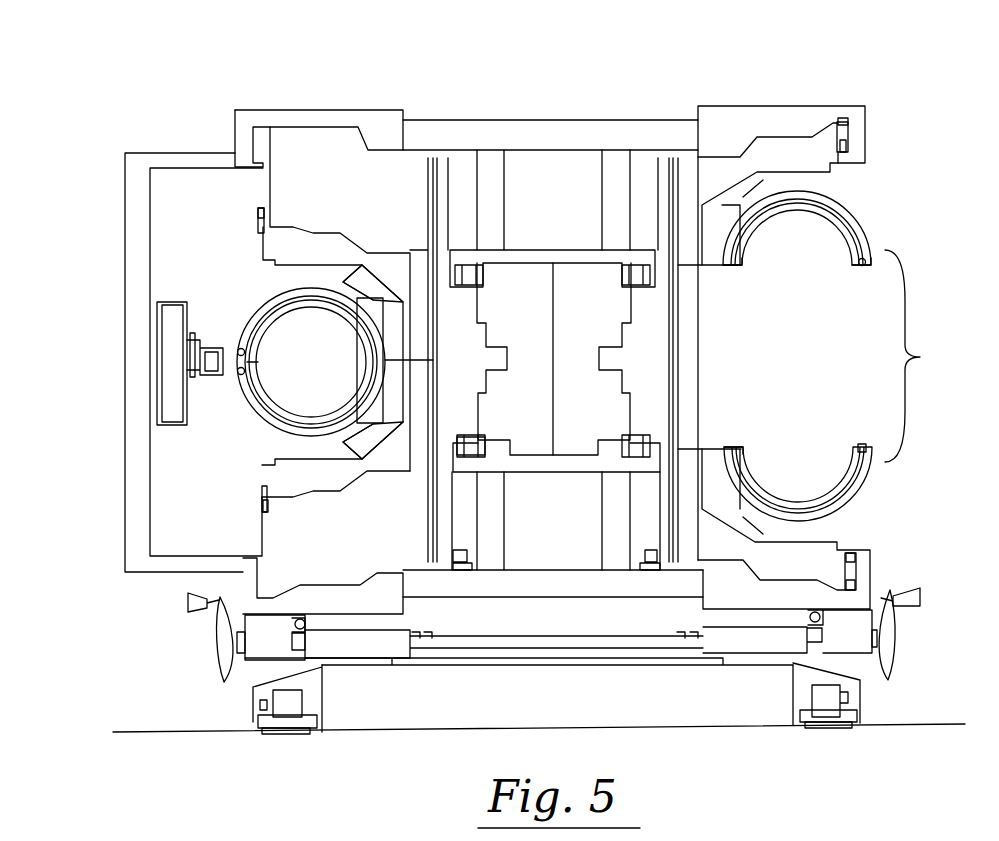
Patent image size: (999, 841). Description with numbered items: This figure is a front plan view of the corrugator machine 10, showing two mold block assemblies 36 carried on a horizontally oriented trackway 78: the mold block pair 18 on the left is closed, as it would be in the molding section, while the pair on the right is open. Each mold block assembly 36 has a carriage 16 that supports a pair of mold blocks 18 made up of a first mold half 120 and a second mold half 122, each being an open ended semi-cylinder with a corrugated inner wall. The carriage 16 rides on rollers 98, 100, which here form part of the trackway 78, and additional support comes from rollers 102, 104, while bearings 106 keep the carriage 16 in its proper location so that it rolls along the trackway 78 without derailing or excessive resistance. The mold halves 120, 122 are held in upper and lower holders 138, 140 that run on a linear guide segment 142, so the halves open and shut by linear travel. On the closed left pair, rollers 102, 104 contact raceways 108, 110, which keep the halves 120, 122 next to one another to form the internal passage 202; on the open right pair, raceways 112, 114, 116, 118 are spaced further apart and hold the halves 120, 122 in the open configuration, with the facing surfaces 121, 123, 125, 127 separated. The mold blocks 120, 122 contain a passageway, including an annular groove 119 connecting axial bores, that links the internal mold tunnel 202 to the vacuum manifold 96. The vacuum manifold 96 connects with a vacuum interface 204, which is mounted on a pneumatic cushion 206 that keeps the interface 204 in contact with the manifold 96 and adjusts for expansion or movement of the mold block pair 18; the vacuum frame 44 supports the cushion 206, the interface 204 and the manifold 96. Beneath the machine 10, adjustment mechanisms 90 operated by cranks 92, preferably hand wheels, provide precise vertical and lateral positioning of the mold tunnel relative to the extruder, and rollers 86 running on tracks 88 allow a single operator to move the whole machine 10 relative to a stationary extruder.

The machine 10 is at (478, 78).
The carriage 16 is at (482, 336).
The mold block pair 18 is at (245, 293).
The mold block assembly 36 is at (308, 226).
The vacuum frame 44 is at (195, 157).
The trackway 78 is at (500, 272).
The rollers 86 is at (283, 706).
The tracks 88 is at (285, 732).
The adjustment mechanism 90 is at (397, 640).
The crank 92 is at (222, 643).
The vacuum manifold 96 is at (239, 348).
The roller 98 is at (482, 265).
The roller 100 is at (490, 456).
The roller 102 is at (258, 228).
The roller 104 is at (262, 493).
The bearings 106 is at (455, 553).
The raceway 108 is at (258, 214).
The raceway 110 is at (265, 508).
The raceway 112 is at (850, 150).
The raceway 114 is at (850, 548).
The raceway 116 is at (845, 125).
The raceway 118 is at (850, 585).
The annular groove 119 is at (838, 238).
The first mold half 120 is at (772, 250).
The facing surface 121 is at (858, 266).
The second mold half 122 is at (770, 455).
The facing surface 123 is at (868, 447).
The facing surface 125 is at (733, 268).
The facing surface 127 is at (733, 448).
The upper holder 138 is at (342, 240).
The lower holder 140 is at (343, 482).
The linear guide segment 142 is at (428, 207).
The internal passage 202 is at (340, 375).
The vacuum interface 204 is at (250, 347).
The pneumatic cushion 206 is at (170, 315).